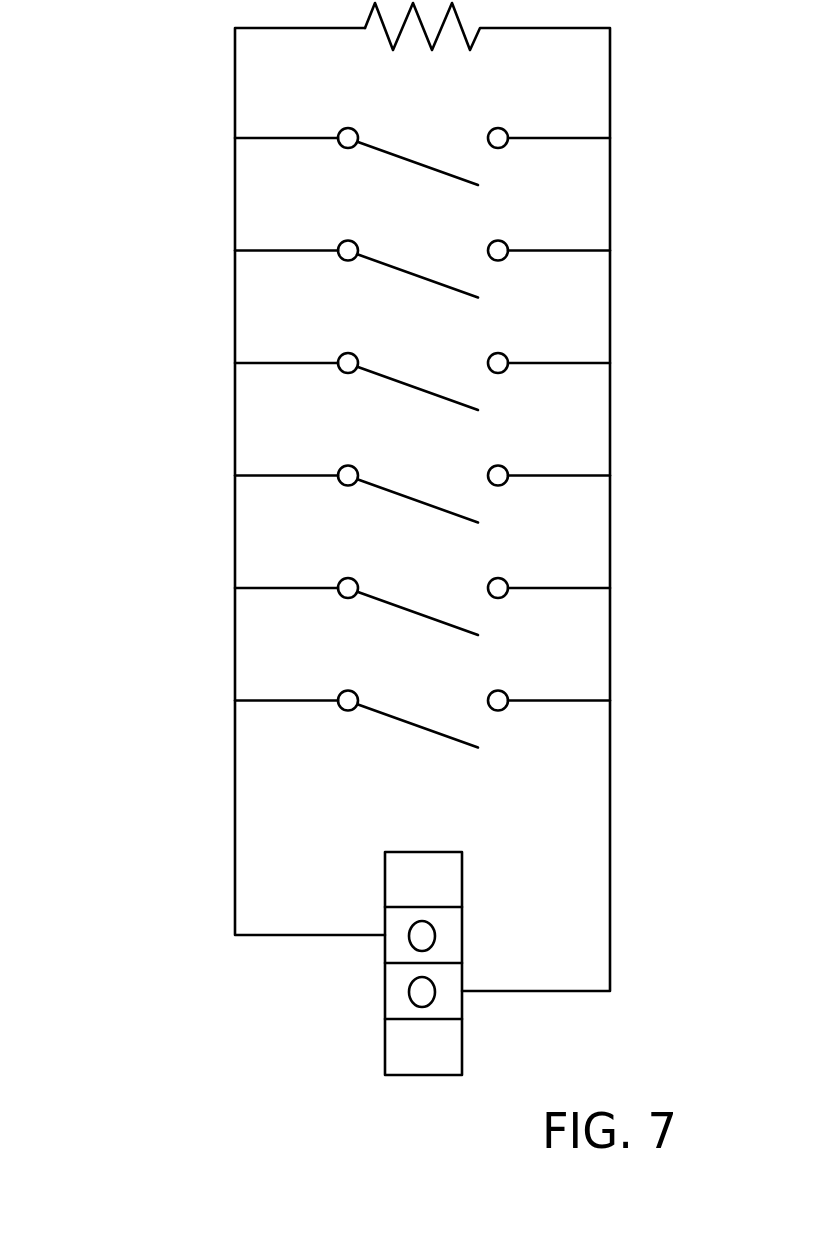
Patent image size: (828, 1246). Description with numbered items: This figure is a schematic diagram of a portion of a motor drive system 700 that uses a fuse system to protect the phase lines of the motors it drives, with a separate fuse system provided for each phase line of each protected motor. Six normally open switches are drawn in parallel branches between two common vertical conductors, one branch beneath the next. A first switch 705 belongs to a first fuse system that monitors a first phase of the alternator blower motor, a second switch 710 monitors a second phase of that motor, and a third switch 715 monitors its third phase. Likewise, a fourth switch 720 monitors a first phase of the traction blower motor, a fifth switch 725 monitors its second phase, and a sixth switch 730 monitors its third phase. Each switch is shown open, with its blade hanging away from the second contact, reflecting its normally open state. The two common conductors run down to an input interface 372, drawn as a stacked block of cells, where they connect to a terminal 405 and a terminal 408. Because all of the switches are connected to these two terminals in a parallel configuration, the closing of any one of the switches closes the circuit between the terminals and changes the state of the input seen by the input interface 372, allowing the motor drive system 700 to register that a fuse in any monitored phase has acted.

The motor drive system 700 is at (116, 135).
The first switch 705 is at (402, 159).
The second switch 710 is at (402, 272).
The third switch 715 is at (402, 384).
The fourth switch 720 is at (402, 496).
The fifth switch 725 is at (402, 609).
The sixth switch 730 is at (402, 722).
The input interface 372 is at (437, 862).
The terminal 405 is at (450, 927).
The terminal 408 is at (450, 982).